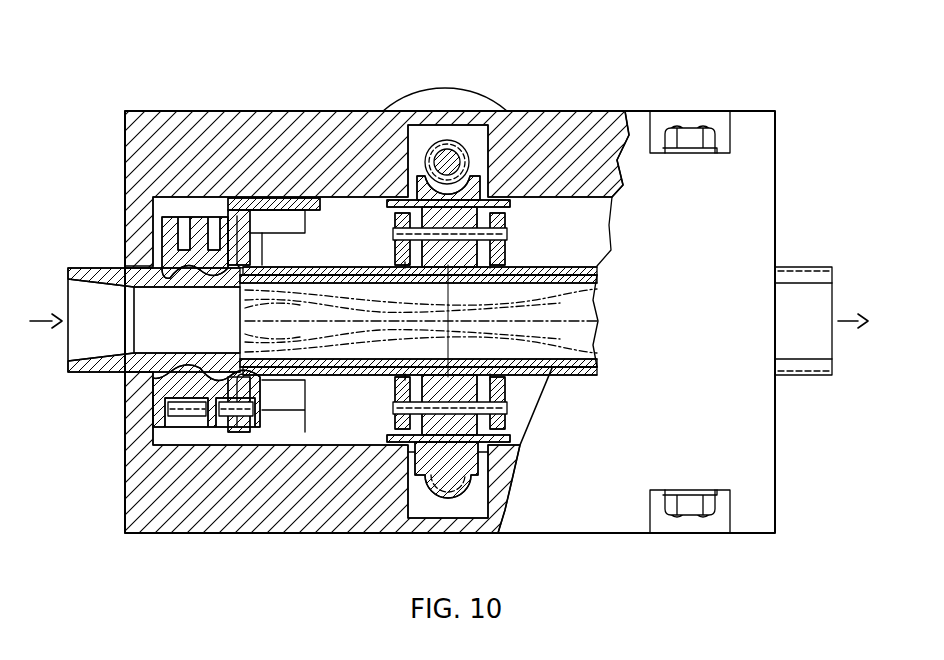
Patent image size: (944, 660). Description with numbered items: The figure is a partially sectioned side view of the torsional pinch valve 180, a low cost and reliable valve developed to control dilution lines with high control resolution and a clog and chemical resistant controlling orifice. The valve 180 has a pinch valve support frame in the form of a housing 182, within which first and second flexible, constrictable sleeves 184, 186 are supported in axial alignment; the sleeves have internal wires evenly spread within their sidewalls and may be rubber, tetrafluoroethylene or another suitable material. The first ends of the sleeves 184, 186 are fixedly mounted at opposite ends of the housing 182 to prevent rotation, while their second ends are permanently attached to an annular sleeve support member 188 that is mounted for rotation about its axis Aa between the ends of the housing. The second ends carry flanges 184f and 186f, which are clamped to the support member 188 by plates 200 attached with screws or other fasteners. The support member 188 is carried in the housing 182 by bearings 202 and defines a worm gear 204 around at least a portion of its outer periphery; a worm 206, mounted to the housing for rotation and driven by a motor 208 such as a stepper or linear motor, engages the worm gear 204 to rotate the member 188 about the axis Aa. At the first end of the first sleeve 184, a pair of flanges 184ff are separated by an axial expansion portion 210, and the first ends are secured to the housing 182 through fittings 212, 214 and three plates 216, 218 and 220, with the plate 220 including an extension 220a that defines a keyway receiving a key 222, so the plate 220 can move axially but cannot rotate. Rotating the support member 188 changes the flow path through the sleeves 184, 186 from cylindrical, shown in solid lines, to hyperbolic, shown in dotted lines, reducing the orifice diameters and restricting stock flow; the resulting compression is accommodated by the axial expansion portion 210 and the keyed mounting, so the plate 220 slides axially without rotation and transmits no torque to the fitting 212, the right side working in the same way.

The torsional pinch valve 180 is at (640, 72).
The housing 182 is at (755, 175).
The first flexible, constrictable sleeve 184 is at (262, 359).
The flange of first sleeve 184f is at (395, 445).
The pair of flanges 184ff is at (215, 262).
The second flexible, constrictable sleeve 186 is at (472, 360).
The flange of second sleeve 186f is at (510, 410).
The annular sleeve support member 188 is at (462, 125).
The plates 200 is at (505, 387).
The bearings 202 is at (440, 505).
The worm gear 204 is at (448, 478).
The worm 206 is at (448, 160).
The motor 208 is at (440, 93).
The axial expansion portion 210 is at (205, 326).
The fitting 212 is at (130, 372).
The fitting 214 is at (798, 268).
The plate 216 is at (190, 420).
The plate 218 is at (248, 430).
The plate 220 is at (268, 395).
The extension 220a is at (265, 233).
The key 222 is at (230, 200).
The axis Aa is at (430, 312).